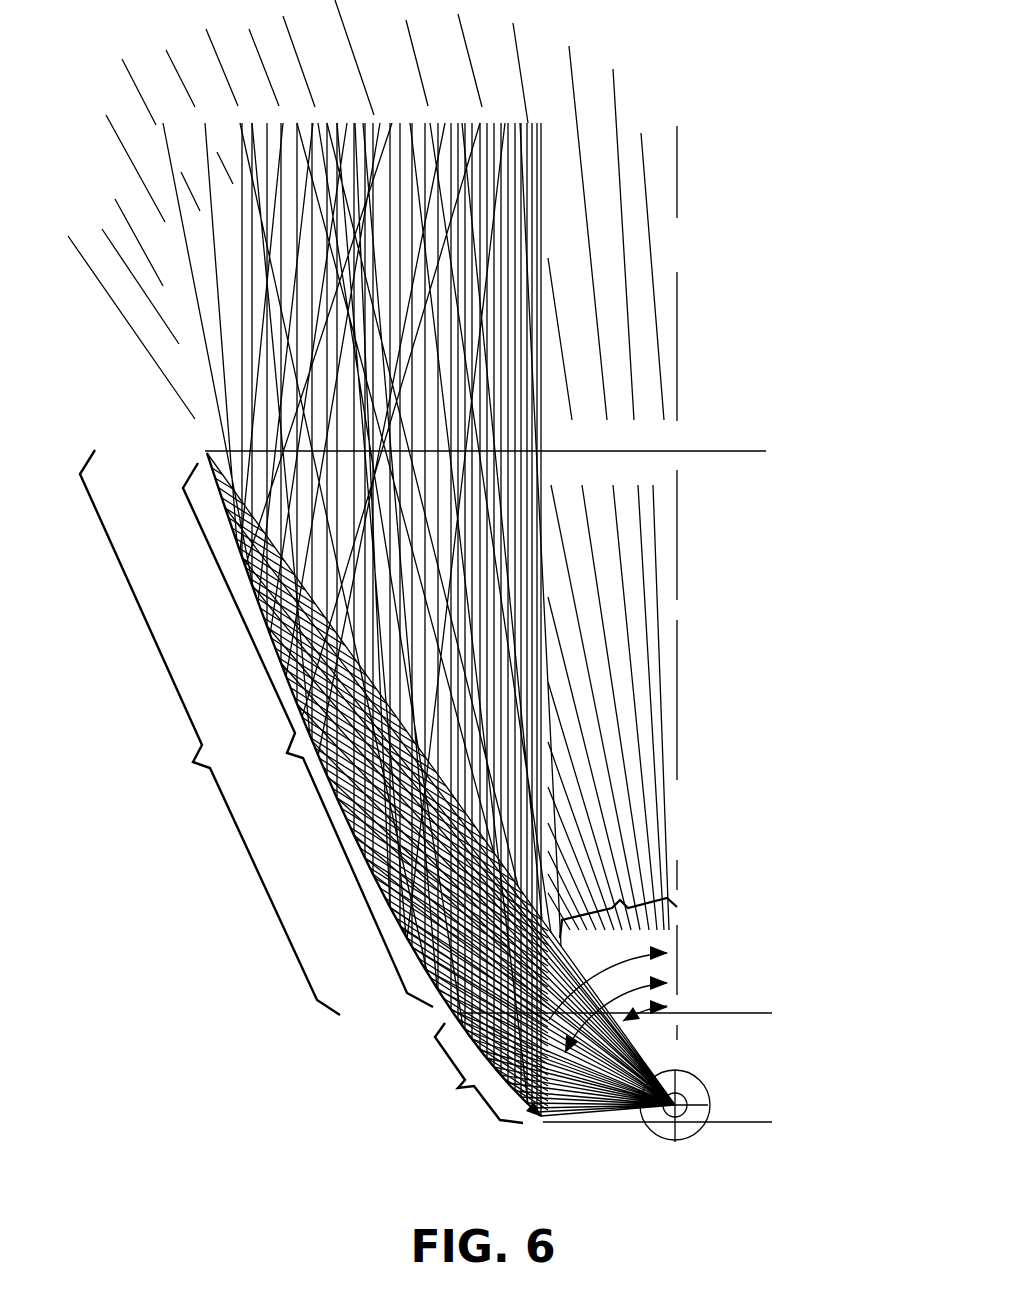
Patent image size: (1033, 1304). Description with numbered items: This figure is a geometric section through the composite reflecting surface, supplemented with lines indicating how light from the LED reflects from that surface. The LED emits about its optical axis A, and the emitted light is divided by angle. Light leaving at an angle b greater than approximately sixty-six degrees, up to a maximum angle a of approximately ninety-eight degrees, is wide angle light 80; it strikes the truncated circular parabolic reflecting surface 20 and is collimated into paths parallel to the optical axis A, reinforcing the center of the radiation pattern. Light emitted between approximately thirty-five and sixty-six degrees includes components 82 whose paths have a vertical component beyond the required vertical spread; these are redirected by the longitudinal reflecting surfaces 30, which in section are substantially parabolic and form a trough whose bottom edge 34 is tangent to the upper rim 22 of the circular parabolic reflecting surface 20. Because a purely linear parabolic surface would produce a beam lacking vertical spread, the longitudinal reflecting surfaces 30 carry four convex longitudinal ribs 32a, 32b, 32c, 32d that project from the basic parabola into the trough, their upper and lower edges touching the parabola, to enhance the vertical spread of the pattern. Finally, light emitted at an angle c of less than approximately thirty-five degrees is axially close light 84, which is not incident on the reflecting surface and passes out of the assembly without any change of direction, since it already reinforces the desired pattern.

The circular parabolic reflecting surface 20 is at (498, 1073).
The upper rim 22 is at (737, 1013).
The longitudinal reflecting surface 30 is at (310, 783).
The convex longitudinal rib 32a is at (433, 977).
The convex longitudinal rib 32b is at (367, 857).
The convex longitudinal rib 32c is at (300, 712).
The convex longitudinal rib 32d is at (245, 563).
The bottom edge 34 is at (453, 1013).
The wide angle light 80 is at (486, 1073).
The light with vertical component 82 is at (318, 733).
The axially close light 84 is at (613, 902).
The optical axis A is at (676, 566).
The maximum angle a is at (648, 950).
The angle of wide angle light b is at (652, 980).
The angle of axially close light c is at (653, 1007).